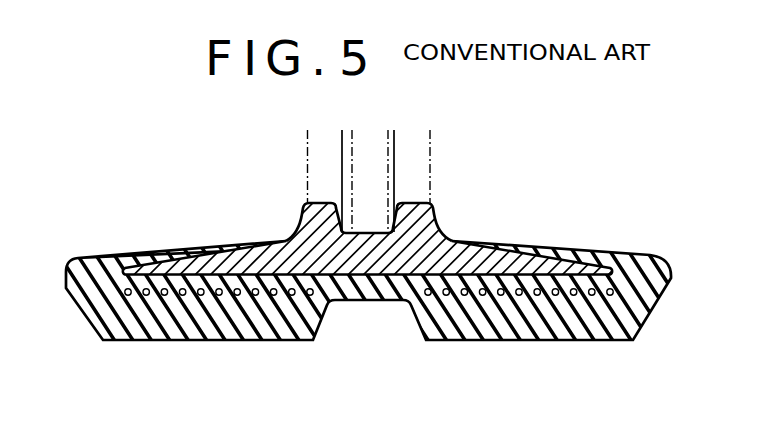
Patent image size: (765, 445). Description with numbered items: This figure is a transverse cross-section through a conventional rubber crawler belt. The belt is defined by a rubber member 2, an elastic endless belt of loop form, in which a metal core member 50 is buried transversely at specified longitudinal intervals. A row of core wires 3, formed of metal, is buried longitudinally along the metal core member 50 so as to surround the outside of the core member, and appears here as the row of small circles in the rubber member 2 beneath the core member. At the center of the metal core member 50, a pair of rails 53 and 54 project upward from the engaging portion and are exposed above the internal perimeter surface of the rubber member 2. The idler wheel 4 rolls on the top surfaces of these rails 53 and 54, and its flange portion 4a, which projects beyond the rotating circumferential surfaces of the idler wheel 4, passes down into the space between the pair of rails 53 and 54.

The rubber member 2 is at (193, 346).
The core wires 3 is at (292, 294).
The idler wheel 4 is at (307, 185).
The flange portion 4a is at (372, 155).
The metal core member 50 is at (188, 252).
The rail 53 is at (297, 237).
The rail 54 is at (439, 216).